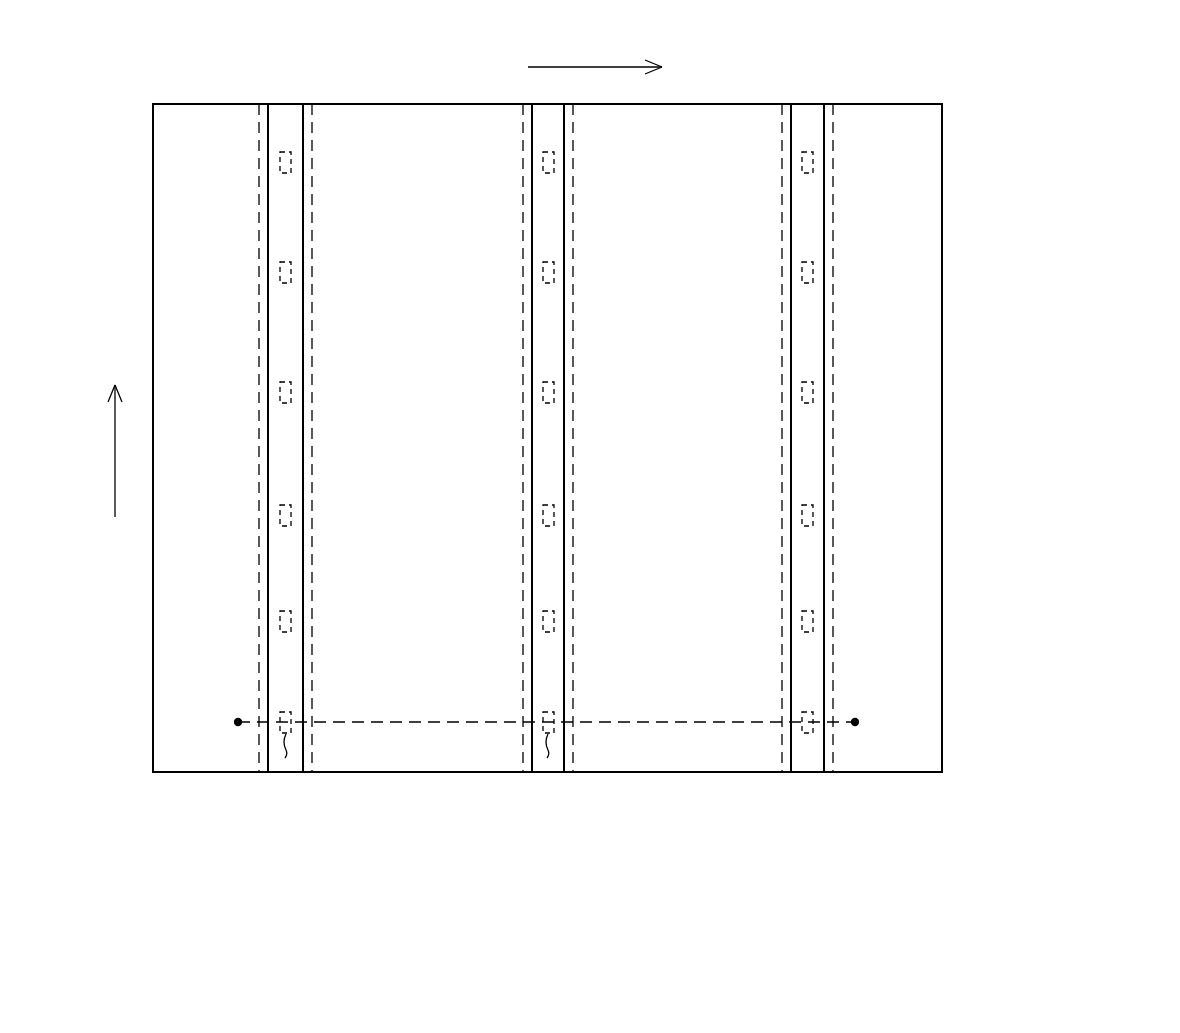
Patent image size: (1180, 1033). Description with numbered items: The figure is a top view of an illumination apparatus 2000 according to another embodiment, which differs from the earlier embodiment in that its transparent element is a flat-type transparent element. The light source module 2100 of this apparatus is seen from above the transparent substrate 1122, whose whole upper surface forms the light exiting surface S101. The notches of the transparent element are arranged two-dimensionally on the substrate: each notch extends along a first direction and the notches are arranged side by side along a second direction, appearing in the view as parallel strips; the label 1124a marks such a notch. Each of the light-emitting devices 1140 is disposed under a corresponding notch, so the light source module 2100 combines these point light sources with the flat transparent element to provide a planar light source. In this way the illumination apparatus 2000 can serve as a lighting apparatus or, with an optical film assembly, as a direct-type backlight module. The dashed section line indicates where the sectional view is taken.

The illumination apparatus 2000 is at (1017, 762).
The light source module 2100 is at (942, 578).
The transparent substrate 1122 is at (910, 446).
The opening / trench 1124a is at (287, 125).
The light exiting surface S101 is at (900, 137).
The light-emitting devices 1140 is at (287, 757).